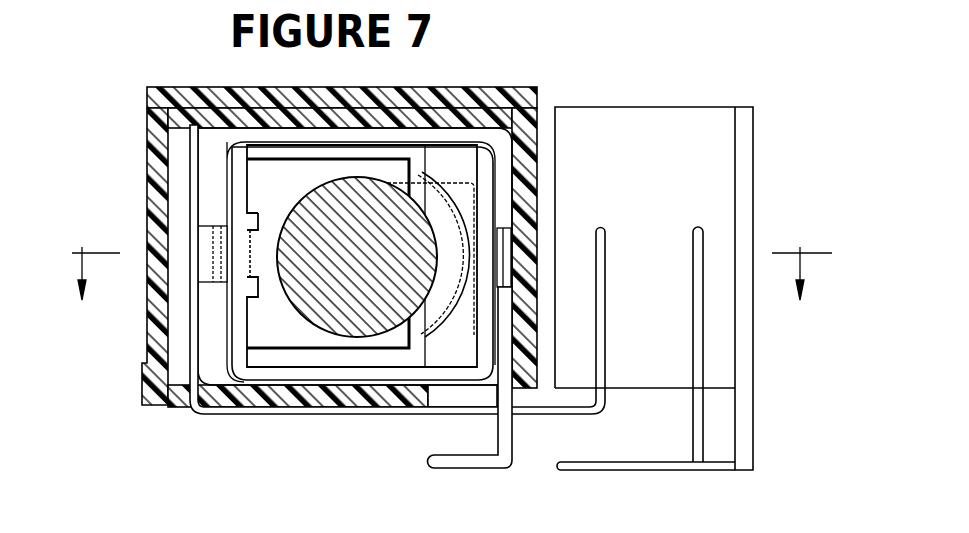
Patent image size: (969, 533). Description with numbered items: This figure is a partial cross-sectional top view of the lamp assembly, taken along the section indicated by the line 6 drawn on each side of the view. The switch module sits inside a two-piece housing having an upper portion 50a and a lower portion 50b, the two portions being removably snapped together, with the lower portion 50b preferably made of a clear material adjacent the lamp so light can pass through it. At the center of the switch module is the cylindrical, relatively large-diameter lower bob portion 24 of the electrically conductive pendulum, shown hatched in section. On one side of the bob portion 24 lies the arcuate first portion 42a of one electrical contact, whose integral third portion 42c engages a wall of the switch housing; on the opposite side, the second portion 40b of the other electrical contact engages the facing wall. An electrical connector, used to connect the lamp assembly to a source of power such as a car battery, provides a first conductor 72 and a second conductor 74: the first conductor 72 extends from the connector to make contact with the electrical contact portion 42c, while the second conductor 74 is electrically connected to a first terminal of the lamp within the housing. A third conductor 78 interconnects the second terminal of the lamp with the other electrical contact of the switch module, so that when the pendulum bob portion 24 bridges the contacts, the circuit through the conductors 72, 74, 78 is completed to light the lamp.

The section line 6- 6 is at (444, 263).
The lower bob portion 24 is at (378, 273).
The second portion 40b is at (499, 229).
The first portion 42a is at (440, 327).
The third portion 42c is at (208, 228).
The upper portion 50a is at (543, 107).
The lower portion 50b is at (455, 88).
The first conductor 72 is at (226, 413).
The second conductor 74 is at (700, 245).
The third conductor 78 is at (455, 462).